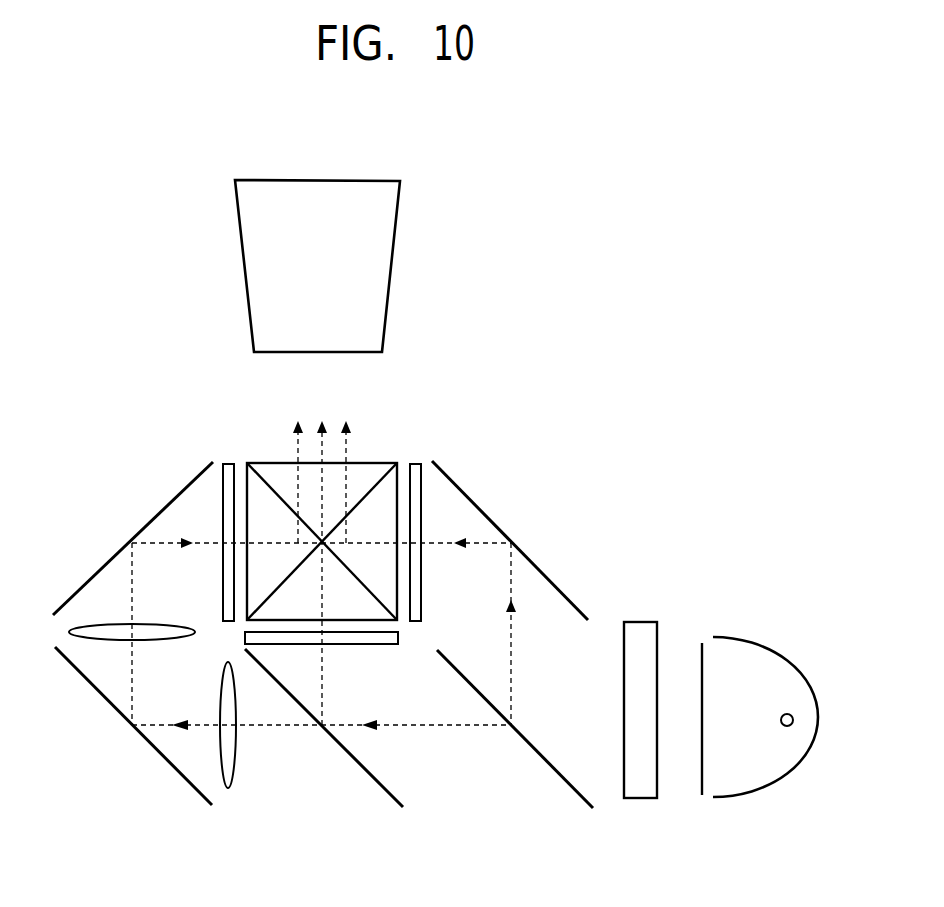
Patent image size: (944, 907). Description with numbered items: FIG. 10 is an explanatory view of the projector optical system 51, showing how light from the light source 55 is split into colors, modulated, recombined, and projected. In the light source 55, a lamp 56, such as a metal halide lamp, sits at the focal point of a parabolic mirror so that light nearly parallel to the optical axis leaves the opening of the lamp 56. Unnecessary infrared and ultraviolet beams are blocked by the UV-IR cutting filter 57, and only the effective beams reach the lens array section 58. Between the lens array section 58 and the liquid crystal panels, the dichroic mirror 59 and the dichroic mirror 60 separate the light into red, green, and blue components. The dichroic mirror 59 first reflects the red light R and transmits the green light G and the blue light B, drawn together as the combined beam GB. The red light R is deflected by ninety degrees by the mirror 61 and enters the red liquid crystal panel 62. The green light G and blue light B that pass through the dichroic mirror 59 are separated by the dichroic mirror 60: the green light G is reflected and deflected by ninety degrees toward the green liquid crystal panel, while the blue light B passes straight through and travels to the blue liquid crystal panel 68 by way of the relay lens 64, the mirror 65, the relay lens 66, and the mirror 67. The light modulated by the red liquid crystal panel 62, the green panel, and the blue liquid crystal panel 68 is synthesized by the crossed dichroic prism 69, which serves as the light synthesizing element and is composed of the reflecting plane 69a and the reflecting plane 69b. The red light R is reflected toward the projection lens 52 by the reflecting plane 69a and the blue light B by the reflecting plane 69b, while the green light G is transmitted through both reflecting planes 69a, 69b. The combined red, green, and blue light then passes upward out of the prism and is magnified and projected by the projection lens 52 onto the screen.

The projection optical system 51 is at (130, 290).
The projection lens 52 is at (396, 255).
The light source 55 is at (760, 646).
The lamp 56 is at (793, 715).
The UV-IR cutting filter 57 is at (700, 665).
The lens array section 58 is at (642, 621).
The dichroic mirror 59 is at (553, 773).
The dichroic mirror 60 is at (368, 770).
The mirror 61 is at (478, 503).
The red liquid crystal panel 62 is at (421, 570).
The relay lens 64 is at (237, 763).
The mirror 65 is at (175, 768).
The relay lens 66 is at (150, 622).
The mirror 67 is at (100, 562).
The blue liquid crystal panel 68 is at (232, 463).
The crossed dichroic prism 69 is at (390, 463).
The reflecting plane 69a is at (268, 478).
The reflecting plane 69b is at (377, 478).
The blue light B is at (132, 668).
The green light G is at (322, 672).
The red light R is at (511, 668).
The green-blue light beam GB is at (415, 727).